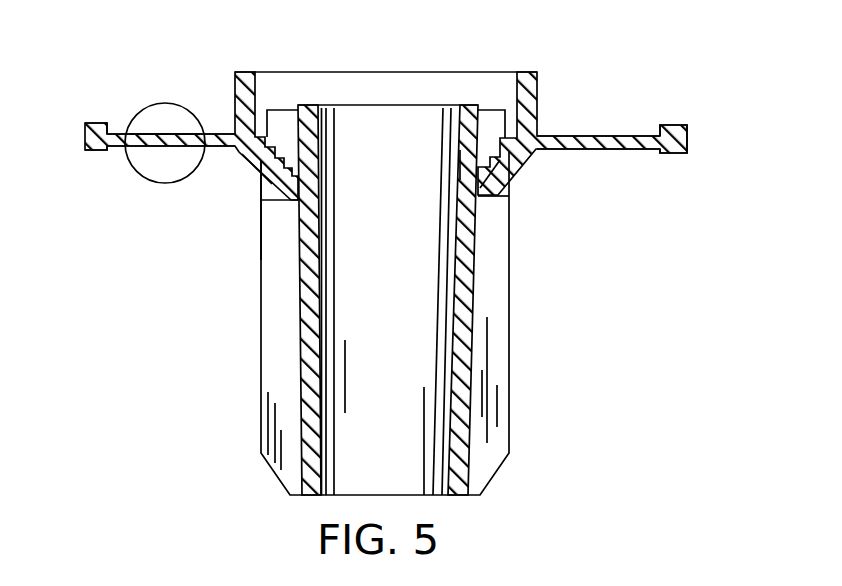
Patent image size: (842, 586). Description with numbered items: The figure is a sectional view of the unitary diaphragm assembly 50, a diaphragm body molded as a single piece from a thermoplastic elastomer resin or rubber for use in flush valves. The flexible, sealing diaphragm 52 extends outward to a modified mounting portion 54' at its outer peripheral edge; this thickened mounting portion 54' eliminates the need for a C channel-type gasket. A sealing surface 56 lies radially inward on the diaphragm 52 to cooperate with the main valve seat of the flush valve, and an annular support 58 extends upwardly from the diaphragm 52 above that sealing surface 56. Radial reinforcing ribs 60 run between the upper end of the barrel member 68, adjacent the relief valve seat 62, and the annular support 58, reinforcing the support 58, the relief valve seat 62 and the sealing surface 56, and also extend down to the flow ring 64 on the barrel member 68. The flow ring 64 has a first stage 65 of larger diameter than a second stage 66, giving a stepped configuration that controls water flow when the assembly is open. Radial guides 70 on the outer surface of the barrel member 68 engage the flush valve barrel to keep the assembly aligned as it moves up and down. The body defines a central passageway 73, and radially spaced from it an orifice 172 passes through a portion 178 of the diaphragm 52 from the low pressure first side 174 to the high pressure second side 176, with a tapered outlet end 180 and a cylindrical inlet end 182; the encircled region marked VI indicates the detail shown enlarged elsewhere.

The unitary diaphragm assembly 50 is at (256, 416).
The diaphragm 52 is at (585, 134).
The modified mounting portion 54' is at (705, 111).
The sealing surface 56 is at (233, 152).
The annular support 58 is at (540, 73).
The radial reinforcing ribs 60 is at (267, 90).
The relief valve seat 62 is at (474, 102).
The flow ring 64 is at (510, 178).
The first stage 65 is at (262, 173).
The second stage 66 is at (263, 210).
The barrel member 68 is at (470, 362).
The radial guides 70 is at (503, 406).
The central passageway 73 is at (460, 167).
The orifice 172 is at (150, 148).
The first side 174 is at (113, 132).
The second side 176 is at (113, 152).
The portion of the diaphragm 178 is at (213, 134).
The first end or outlet end 180 is at (120, 130).
The second end or inlet end 182 is at (168, 154).
The detail circle VI is at (166, 130).